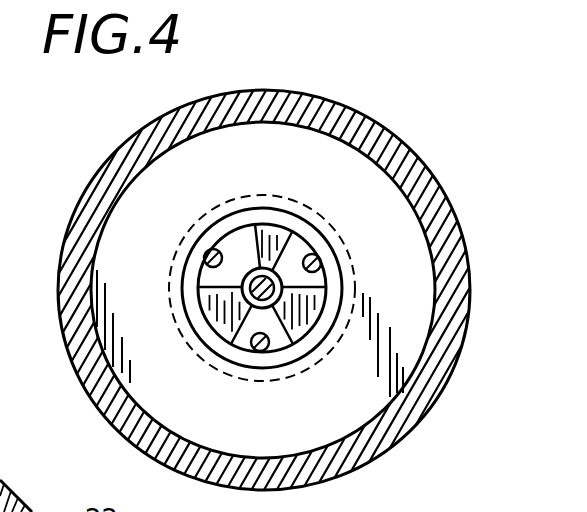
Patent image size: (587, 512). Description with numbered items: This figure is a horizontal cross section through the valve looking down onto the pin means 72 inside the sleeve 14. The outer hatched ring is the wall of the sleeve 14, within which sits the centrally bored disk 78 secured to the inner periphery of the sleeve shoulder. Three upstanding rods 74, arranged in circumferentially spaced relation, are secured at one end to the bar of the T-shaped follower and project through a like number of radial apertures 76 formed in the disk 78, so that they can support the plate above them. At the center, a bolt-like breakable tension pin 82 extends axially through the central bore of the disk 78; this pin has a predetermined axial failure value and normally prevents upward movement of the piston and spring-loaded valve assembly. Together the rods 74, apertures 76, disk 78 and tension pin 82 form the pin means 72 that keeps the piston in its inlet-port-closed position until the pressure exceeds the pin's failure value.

The sleeve 14 is at (347, 104).
The pin means 72 is at (212, 211).
The upstanding rods 74 is at (204, 259).
The radial apertures 76 is at (222, 240).
The centrally bored disk 78 is at (289, 205).
The breakable tension pin 82 is at (256, 226).